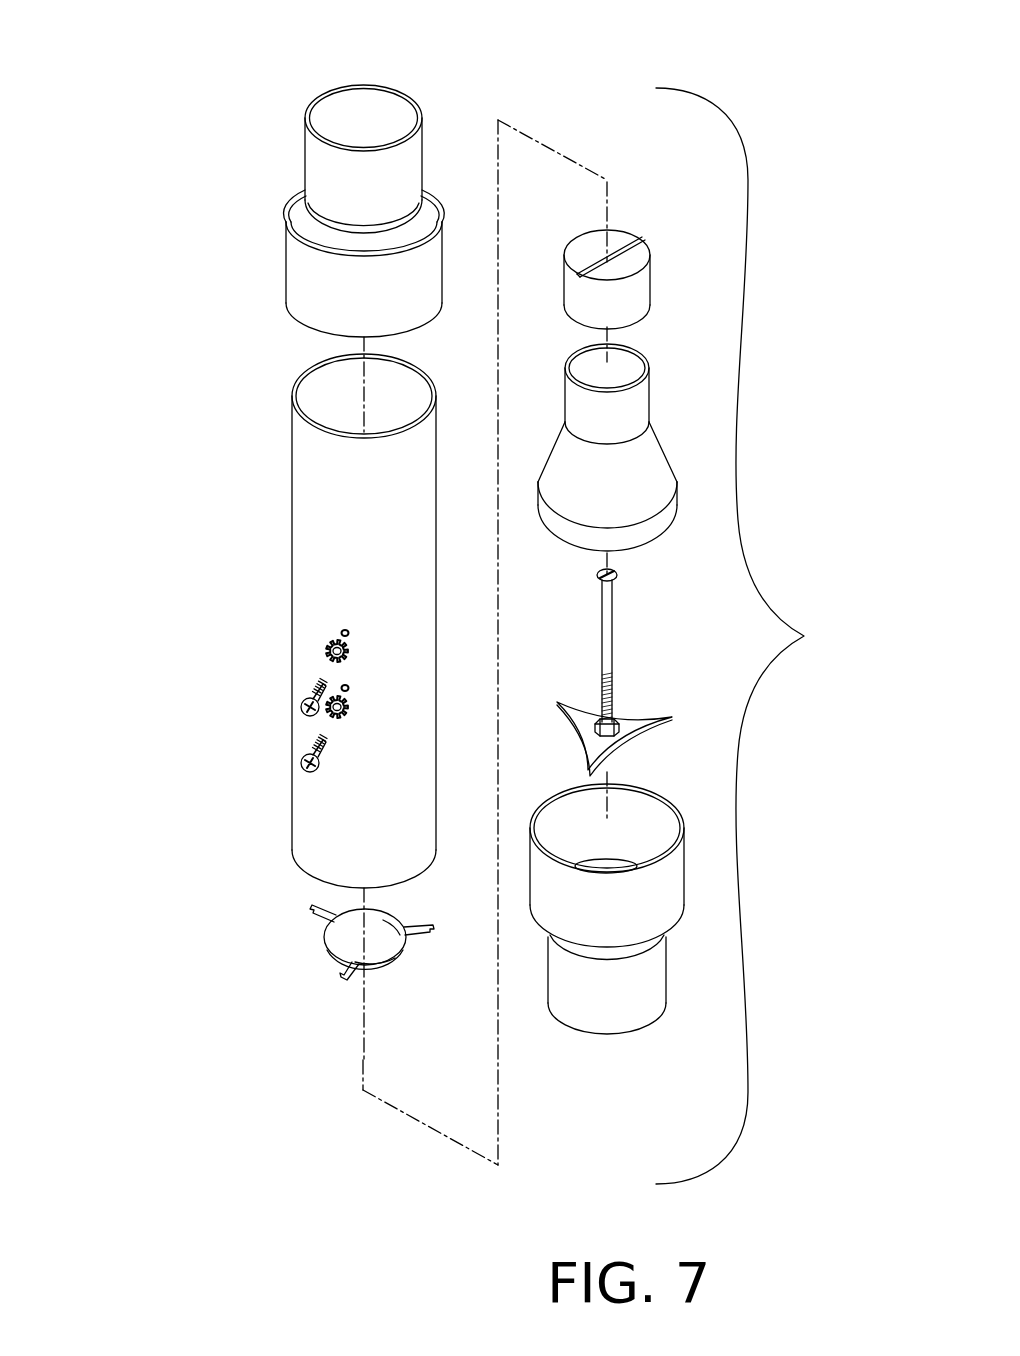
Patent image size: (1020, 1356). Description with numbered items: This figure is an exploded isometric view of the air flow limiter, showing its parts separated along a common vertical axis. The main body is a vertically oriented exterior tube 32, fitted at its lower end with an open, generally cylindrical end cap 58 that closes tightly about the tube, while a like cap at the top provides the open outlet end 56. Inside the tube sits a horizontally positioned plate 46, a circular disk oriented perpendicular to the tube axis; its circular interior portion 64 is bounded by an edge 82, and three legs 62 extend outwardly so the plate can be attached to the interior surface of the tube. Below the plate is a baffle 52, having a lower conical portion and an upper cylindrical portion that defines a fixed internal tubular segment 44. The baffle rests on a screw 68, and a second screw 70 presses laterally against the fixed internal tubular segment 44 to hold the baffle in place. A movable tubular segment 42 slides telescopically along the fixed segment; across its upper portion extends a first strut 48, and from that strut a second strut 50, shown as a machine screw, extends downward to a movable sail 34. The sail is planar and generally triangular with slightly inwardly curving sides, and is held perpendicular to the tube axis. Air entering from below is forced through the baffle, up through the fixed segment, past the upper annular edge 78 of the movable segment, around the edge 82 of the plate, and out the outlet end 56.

The vertically oriented exterior tube 32 is at (323, 503).
The movable sail 34 is at (632, 723).
The movable tubular segment 42 is at (640, 296).
The fixed internal tubular segment 44 is at (643, 392).
The horizontally positioned plate 46 is at (350, 935).
The first strut 48 is at (620, 245).
The second strut 50 is at (608, 622).
The baffle 52 is at (635, 438).
The outlet end 56 is at (359, 125).
The end cap 58 is at (632, 982).
The legs 62 is at (312, 907).
The circular interior portion 64 is at (388, 923).
The screw 68 is at (301, 762).
The screw 70 is at (301, 704).
The upper annular edge 78 is at (643, 242).
The edge 82 is at (397, 956).